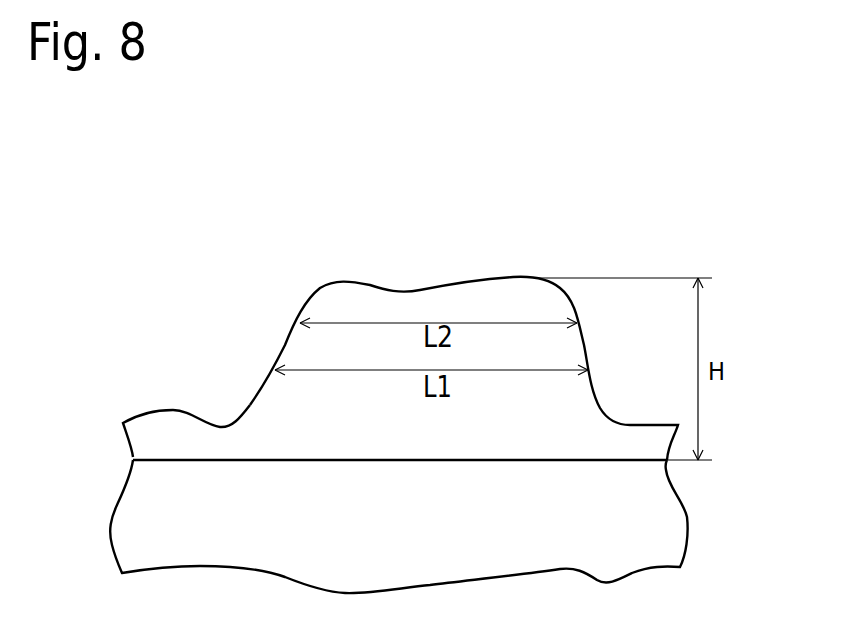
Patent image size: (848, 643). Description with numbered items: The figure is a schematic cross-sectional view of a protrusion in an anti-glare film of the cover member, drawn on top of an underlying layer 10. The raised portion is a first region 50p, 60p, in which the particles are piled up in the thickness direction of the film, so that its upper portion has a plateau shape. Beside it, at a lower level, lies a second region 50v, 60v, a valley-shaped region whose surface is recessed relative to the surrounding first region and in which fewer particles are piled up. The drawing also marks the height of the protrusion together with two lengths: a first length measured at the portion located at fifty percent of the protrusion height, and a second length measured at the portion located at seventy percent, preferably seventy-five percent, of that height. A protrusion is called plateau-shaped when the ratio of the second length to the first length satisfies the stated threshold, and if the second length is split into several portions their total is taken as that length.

The substrate 10 is at (658, 537).
The second region 50v is at (187, 381).
The second region 60v is at (172, 425).
The first region 50p is at (464, 324).
The first region 60p is at (490, 290).